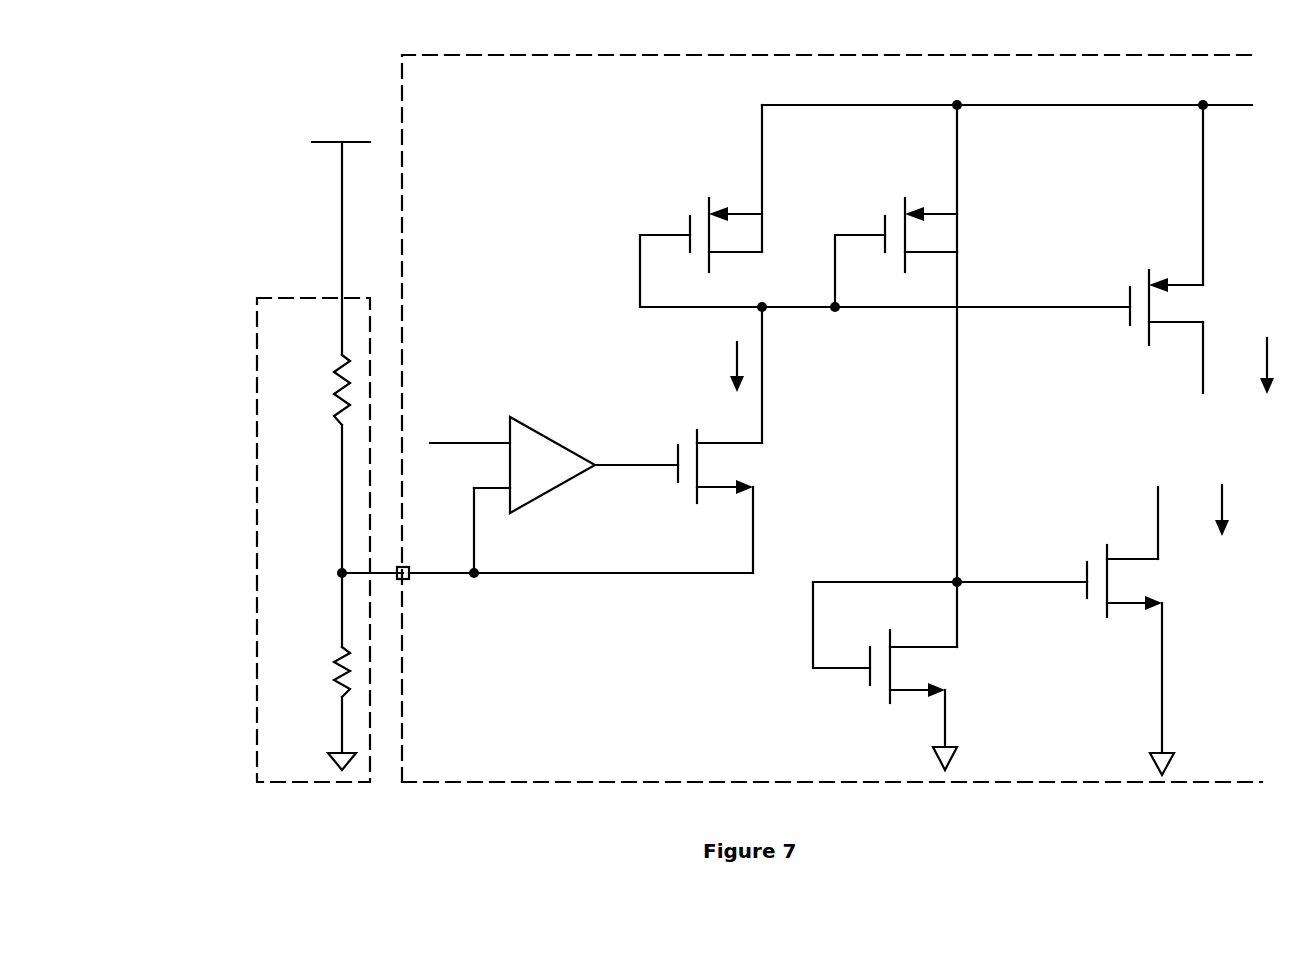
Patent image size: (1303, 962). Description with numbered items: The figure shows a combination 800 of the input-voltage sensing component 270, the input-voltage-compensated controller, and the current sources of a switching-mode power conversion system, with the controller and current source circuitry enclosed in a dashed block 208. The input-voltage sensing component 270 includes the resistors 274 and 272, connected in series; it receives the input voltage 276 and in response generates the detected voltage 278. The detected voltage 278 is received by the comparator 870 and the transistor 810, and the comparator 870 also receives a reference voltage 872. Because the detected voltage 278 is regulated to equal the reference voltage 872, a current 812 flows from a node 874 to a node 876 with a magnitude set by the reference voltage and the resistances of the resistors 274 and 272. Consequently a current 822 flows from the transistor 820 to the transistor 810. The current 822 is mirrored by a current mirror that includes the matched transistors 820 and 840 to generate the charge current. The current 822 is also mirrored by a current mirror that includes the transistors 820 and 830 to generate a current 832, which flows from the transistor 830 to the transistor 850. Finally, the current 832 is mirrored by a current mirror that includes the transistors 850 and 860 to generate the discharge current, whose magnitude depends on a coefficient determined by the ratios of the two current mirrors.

The combination 800 is at (200, 100).
The current sense circuit 208 is at (545, 785).
The input-voltage sensing component 270 is at (257, 520).
The input voltage 276 is at (338, 140).
The resistor 274 is at (332, 404).
The node 876 is at (338, 570).
The resistor 272 is at (328, 683).
The detected voltage 278 is at (388, 580).
The current 812 is at (430, 570).
The node 874 is at (477, 578).
The reference voltage 872 is at (489, 440).
The comparator 870 is at (556, 498).
The transistor 810 is at (694, 492).
The current 822 is at (768, 364).
The transistor 820 is at (690, 222).
The transistor 830 is at (885, 222).
The current 832 is at (960, 384).
The transistor 840 is at (1148, 276).
The transistor 850 is at (888, 694).
The transistor 860 is at (1101, 606).